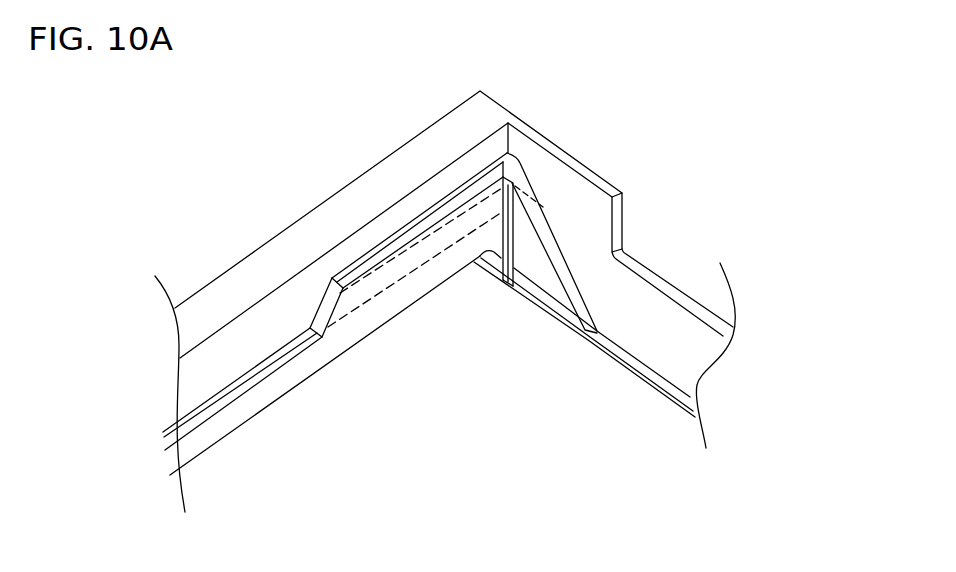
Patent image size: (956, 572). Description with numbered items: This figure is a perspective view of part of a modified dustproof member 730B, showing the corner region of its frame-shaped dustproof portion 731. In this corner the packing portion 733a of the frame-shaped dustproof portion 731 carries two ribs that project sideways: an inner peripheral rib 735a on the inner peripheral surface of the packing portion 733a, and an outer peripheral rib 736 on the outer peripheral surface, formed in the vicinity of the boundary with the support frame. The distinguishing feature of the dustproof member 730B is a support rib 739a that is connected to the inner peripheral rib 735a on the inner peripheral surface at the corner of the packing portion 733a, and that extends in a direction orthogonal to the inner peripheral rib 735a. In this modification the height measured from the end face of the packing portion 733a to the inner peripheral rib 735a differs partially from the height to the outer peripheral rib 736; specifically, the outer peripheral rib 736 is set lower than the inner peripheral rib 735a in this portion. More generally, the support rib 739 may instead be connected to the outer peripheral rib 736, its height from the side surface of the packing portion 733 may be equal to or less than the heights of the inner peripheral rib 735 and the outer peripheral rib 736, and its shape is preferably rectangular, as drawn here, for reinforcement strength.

The dustproof member 730B is at (606, 89).
The frame-shaped dustproof portion 731 is at (383, 178).
The packing portion 733 is at (325, 414).
The packing portion 733a is at (228, 418).
The inner peripheral rib 735 is at (429, 337).
The inner peripheral rib 735a is at (358, 270).
The outer peripheral rib 736 is at (403, 268).
The support rib 739 is at (537, 301).
The support rib 739a is at (508, 284).